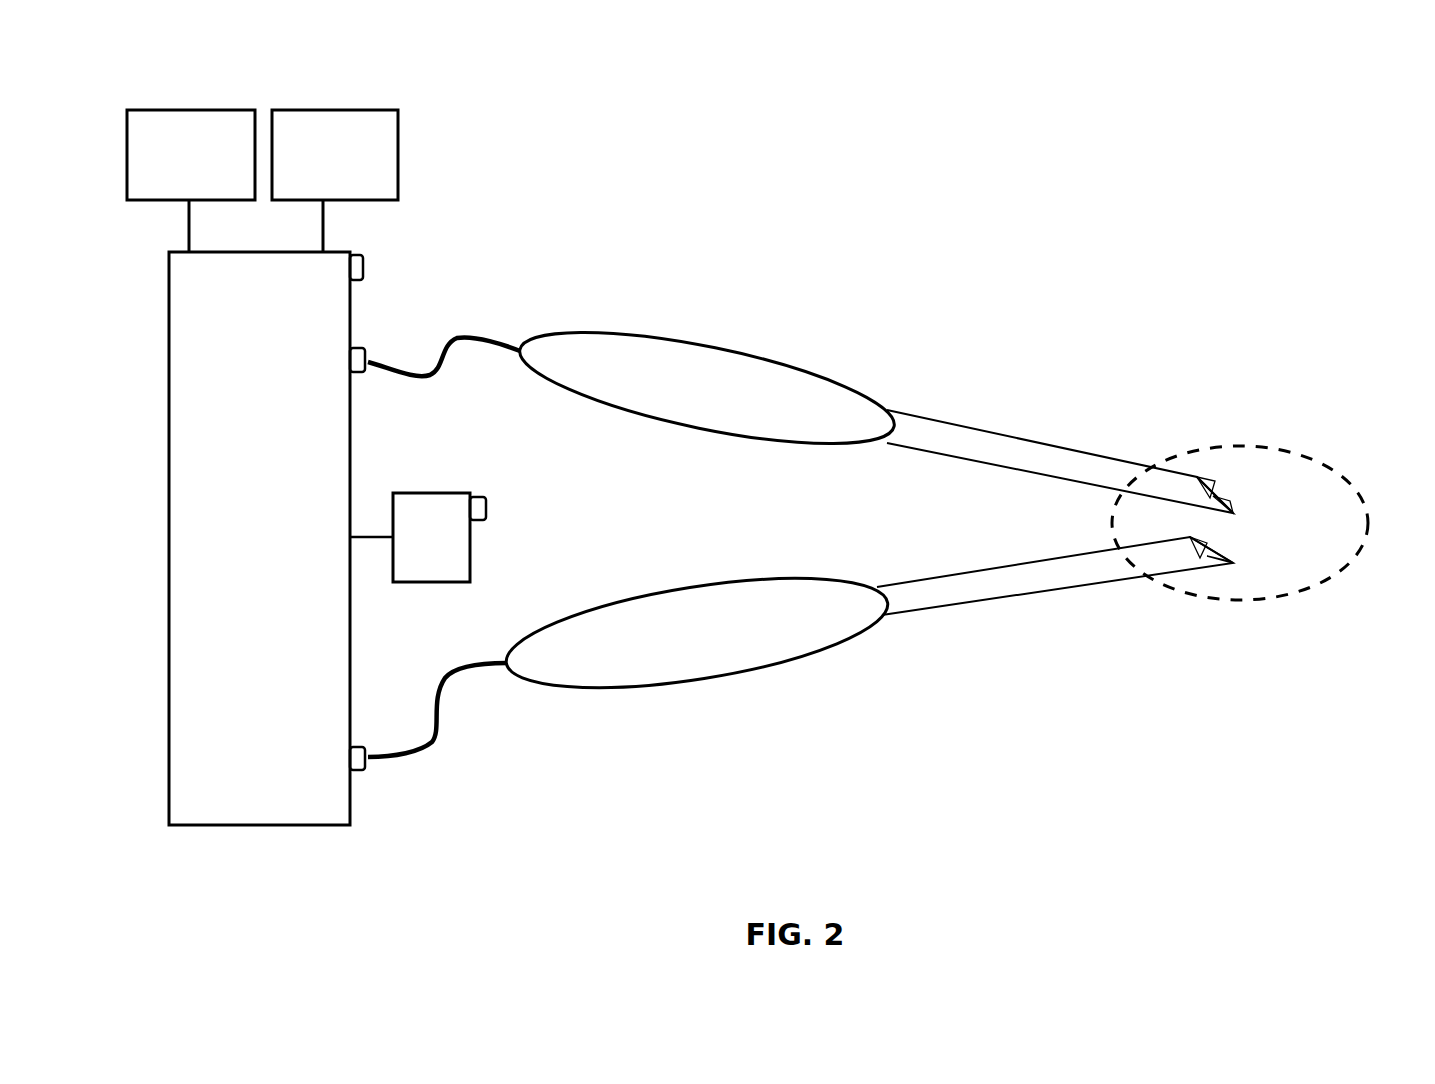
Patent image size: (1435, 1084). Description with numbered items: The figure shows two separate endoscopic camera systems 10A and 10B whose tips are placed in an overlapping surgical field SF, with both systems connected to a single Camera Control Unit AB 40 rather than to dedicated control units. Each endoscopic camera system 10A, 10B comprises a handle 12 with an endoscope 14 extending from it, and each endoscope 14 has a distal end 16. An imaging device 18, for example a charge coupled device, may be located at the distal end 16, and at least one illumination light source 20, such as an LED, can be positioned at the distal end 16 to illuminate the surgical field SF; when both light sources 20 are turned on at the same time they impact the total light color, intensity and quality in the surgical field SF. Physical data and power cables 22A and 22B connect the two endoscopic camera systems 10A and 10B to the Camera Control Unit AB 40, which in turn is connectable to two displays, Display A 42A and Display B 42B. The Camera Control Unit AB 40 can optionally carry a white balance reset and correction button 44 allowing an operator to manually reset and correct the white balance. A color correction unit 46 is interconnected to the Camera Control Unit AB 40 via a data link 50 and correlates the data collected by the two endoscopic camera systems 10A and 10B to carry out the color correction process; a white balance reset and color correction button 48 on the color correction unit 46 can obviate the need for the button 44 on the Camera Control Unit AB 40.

The endoscopic camera system 10A is at (927, 377).
The endoscopic camera system 10B is at (870, 660).
The handle 12 is at (760, 357).
The endoscope 14 is at (1050, 442).
The distal end 16 is at (1225, 498).
The imaging device 18 is at (1200, 480).
The illumination light source 20 is at (1217, 502).
The data and power cable 22A is at (472, 337).
The data and power cable 22B is at (437, 742).
The Camera Control Unit AB 40 is at (350, 320).
The Display A 42A is at (240, 108).
The Display B 42B is at (398, 172).
The white balance reset and correction button 44 is at (368, 260).
The color correction unit 46 is at (472, 568).
The white balance reset and color correction button 48 is at (487, 512).
The data link 50 is at (362, 542).
The surgical field SF is at (1265, 610).